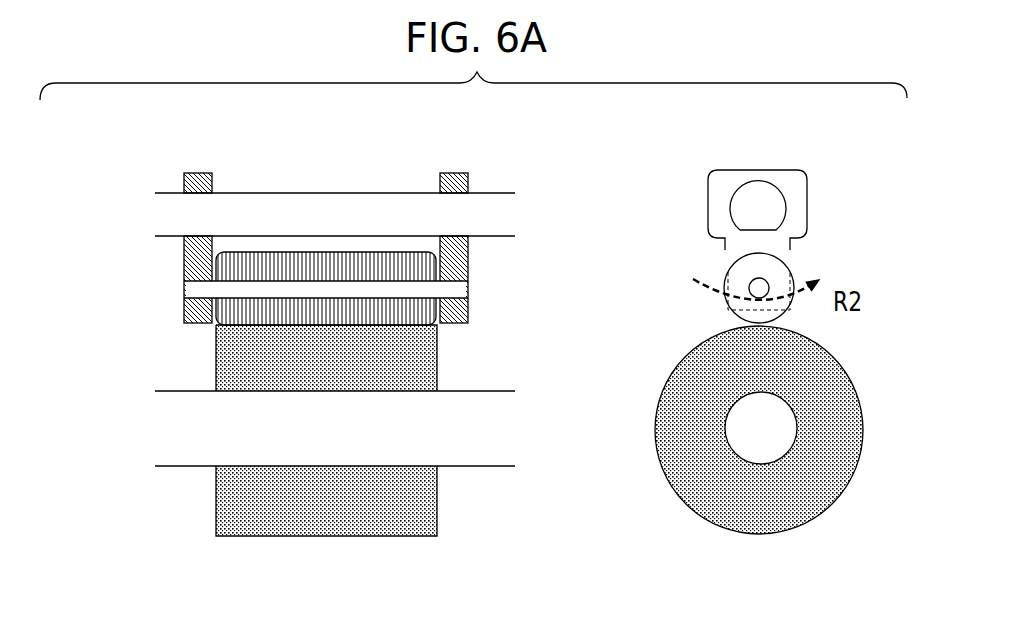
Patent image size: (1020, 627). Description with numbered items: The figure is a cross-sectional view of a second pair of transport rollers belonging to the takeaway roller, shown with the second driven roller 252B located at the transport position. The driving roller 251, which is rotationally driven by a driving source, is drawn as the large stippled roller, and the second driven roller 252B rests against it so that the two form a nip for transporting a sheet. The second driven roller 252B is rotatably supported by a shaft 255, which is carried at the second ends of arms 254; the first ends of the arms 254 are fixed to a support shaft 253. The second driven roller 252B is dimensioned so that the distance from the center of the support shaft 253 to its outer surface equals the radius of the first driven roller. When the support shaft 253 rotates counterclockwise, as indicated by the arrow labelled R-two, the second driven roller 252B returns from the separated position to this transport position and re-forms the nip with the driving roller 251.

The driving roller 251 is at (238, 490).
The second driven roller 252B is at (312, 262).
The support shaft 253 is at (473, 218).
The arm 254 is at (186, 262).
The shaft 255 is at (253, 290).